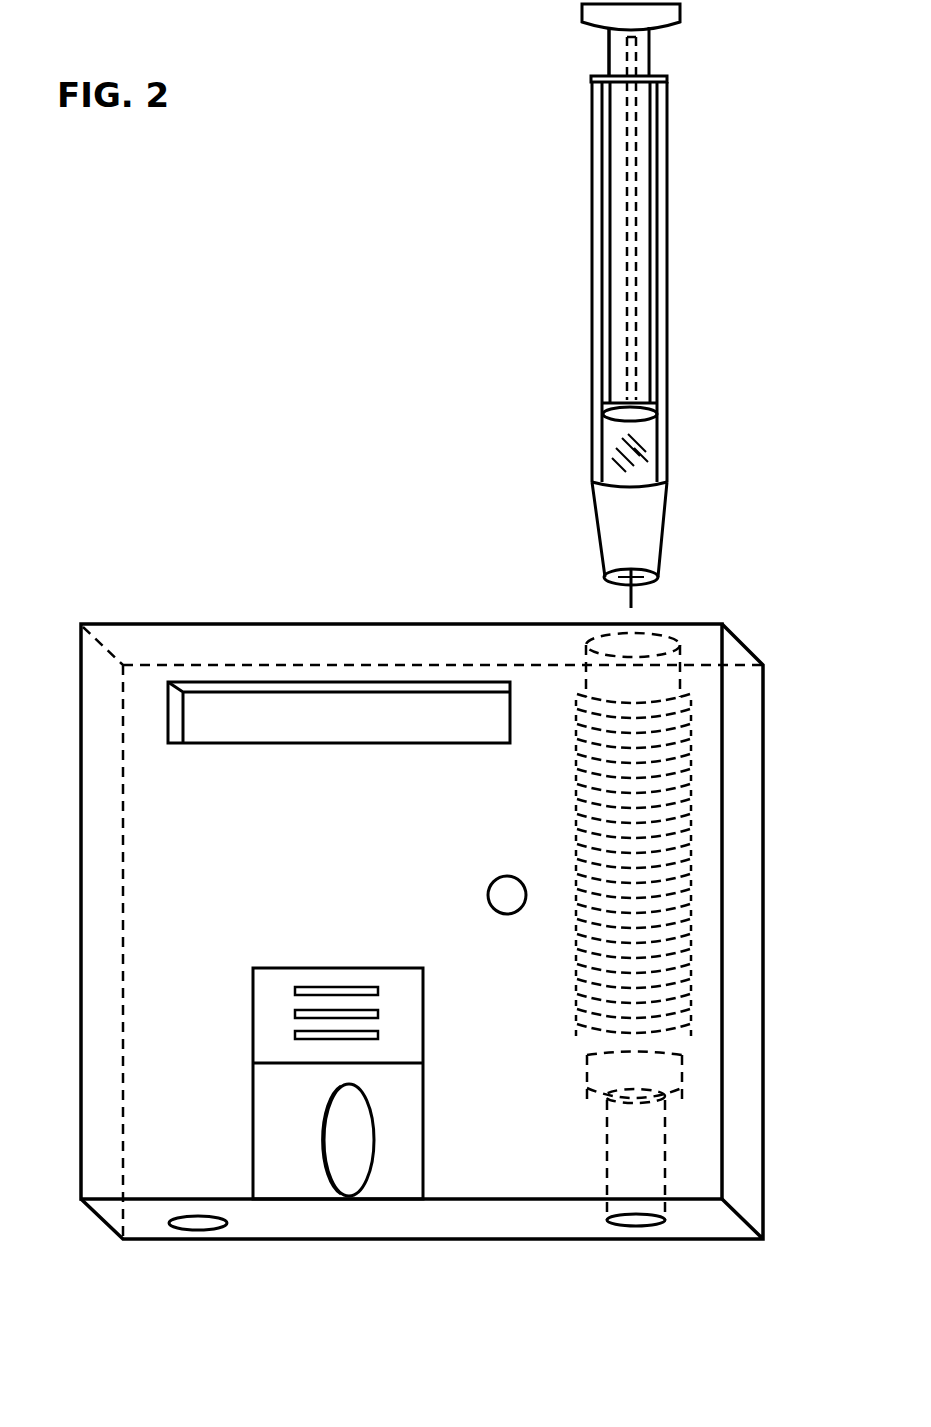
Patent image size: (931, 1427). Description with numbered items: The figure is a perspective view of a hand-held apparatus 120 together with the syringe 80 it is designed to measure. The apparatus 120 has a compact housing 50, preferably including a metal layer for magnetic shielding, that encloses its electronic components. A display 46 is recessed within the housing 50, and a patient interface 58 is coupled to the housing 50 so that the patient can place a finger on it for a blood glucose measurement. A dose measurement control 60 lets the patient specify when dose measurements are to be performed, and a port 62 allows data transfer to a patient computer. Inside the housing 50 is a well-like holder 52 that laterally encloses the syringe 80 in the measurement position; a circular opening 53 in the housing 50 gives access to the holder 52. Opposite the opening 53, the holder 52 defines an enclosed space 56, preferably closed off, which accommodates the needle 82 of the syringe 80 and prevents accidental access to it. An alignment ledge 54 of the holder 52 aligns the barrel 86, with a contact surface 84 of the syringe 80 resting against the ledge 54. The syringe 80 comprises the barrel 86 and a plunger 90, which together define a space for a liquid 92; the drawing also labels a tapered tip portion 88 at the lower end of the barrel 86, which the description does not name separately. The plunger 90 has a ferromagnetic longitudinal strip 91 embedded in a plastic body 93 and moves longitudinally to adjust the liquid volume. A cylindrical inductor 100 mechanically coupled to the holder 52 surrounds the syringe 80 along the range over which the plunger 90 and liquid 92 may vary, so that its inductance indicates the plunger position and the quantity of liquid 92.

The syringe 80 is at (498, 278).
The plunger 90 is at (652, 48).
The plastic body 93 is at (612, 57).
The longitudinal strip 91 is at (637, 218).
The barrel 86 is at (670, 410).
The liquid 92 is at (648, 431).
The syringe tip 88 is at (668, 532).
The needle 82 is at (633, 598).
The contact surface 84 is at (620, 583).
The apparatus 120 is at (186, 550).
The housing 50 is at (763, 790).
The display 46 is at (280, 744).
The dose measurement control 60 is at (488, 895).
The patient interface 58 is at (214, 1066).
The port 62 is at (198, 1229).
The circular opening 53 is at (680, 640).
The cylindrical inductor 100 is at (690, 790).
The holder 52 is at (706, 867).
The alignment ledge 54 is at (674, 1079).
The enclosed space 56 is at (665, 1158).